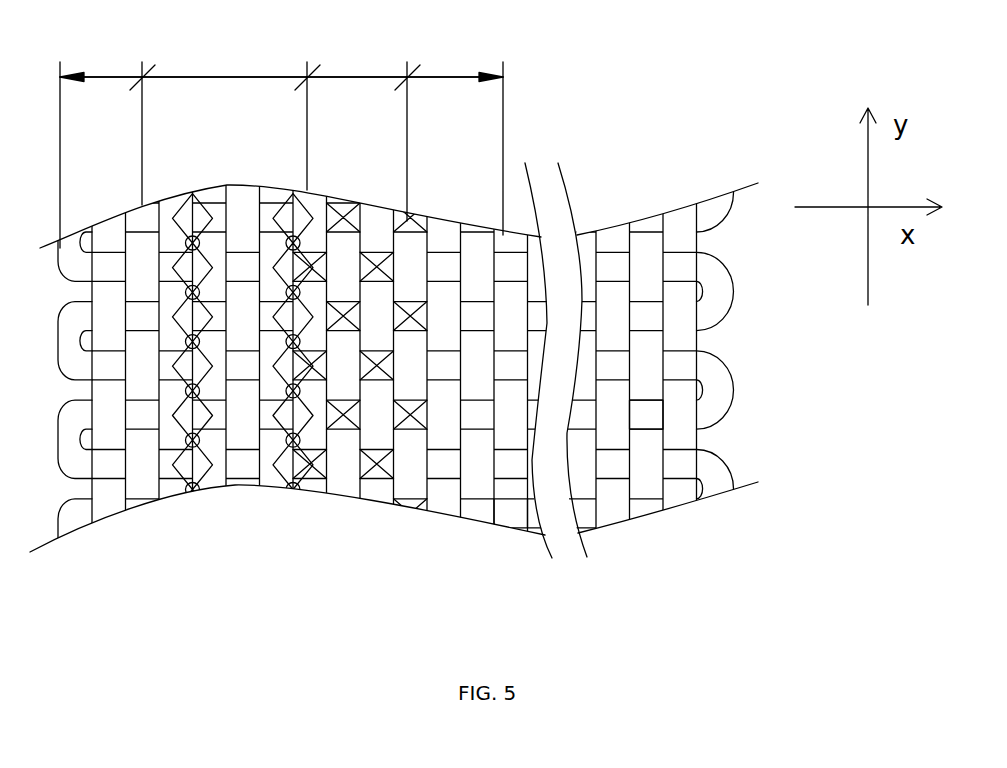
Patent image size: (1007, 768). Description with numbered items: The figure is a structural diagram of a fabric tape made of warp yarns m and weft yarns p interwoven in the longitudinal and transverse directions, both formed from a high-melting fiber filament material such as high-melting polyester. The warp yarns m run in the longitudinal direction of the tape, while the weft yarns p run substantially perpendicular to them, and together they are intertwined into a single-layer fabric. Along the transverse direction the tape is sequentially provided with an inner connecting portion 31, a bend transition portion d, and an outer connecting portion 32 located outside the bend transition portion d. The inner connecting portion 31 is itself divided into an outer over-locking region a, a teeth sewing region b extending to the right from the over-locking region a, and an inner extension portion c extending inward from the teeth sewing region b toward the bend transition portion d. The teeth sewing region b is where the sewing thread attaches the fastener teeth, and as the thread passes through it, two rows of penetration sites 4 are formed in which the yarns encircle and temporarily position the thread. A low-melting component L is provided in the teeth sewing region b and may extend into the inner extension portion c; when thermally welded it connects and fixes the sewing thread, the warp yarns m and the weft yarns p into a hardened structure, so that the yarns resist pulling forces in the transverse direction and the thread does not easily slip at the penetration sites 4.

The penetration sites 4 is at (192, 442).
The inner connecting portion 31 is at (325, 485).
The outer connecting portion 32 is at (610, 518).
The low-melting component L is at (284, 213).
The weft yarns p is at (652, 413).
The warp yarns m is at (516, 518).
The over-locking region a is at (101, 38).
The teeth sewing region b is at (224, 38).
The inner extension portion c is at (357, 38).
The bend transition portion d is at (455, 38).